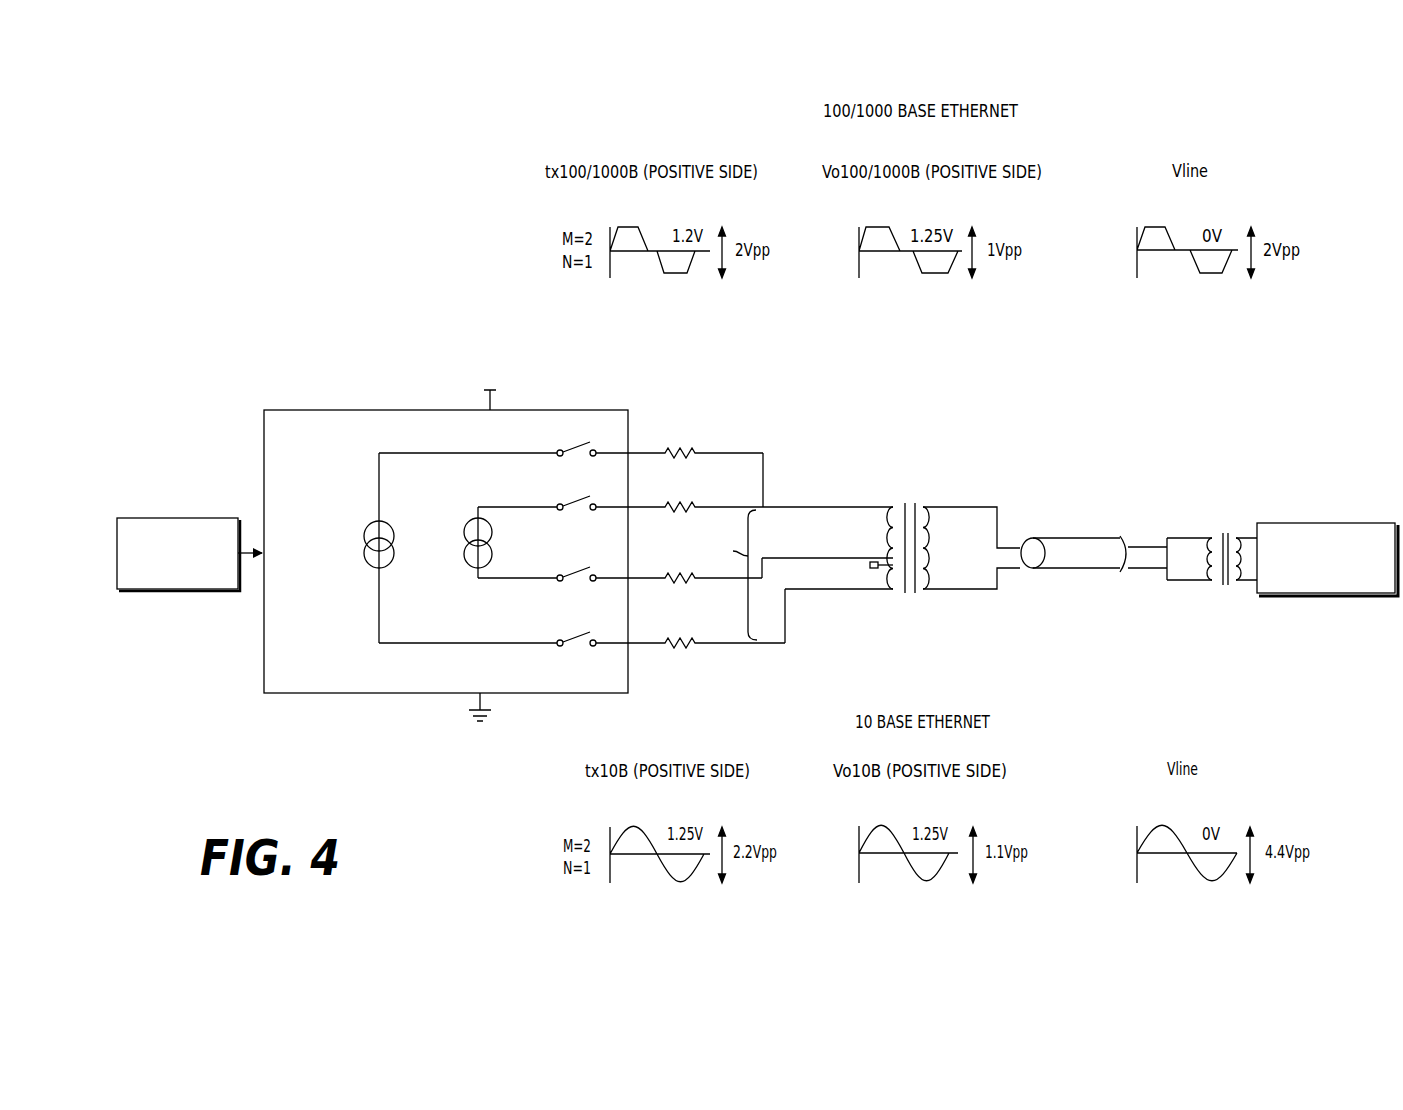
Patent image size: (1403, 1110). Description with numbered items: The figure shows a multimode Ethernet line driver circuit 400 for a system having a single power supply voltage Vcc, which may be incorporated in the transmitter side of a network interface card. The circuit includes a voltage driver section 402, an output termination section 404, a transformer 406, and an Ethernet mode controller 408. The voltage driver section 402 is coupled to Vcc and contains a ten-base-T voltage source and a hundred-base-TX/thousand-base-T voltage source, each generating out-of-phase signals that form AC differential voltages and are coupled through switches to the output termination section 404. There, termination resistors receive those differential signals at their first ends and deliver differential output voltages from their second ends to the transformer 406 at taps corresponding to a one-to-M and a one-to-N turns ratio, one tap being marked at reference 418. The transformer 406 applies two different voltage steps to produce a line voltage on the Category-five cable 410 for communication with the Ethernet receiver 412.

The multimode Ethernet line driver circuit 400 is at (951, 374).
The voltage driver section 402 is at (312, 693).
The output termination section 404 is at (796, 428).
The transformer 406 is at (921, 470).
The Ethernet mode controller 408 is at (197, 518).
The cable 410 is at (1075, 490).
The Ethernet receiver 412 is at (1309, 461).
The transformer center tap 418 is at (868, 569).